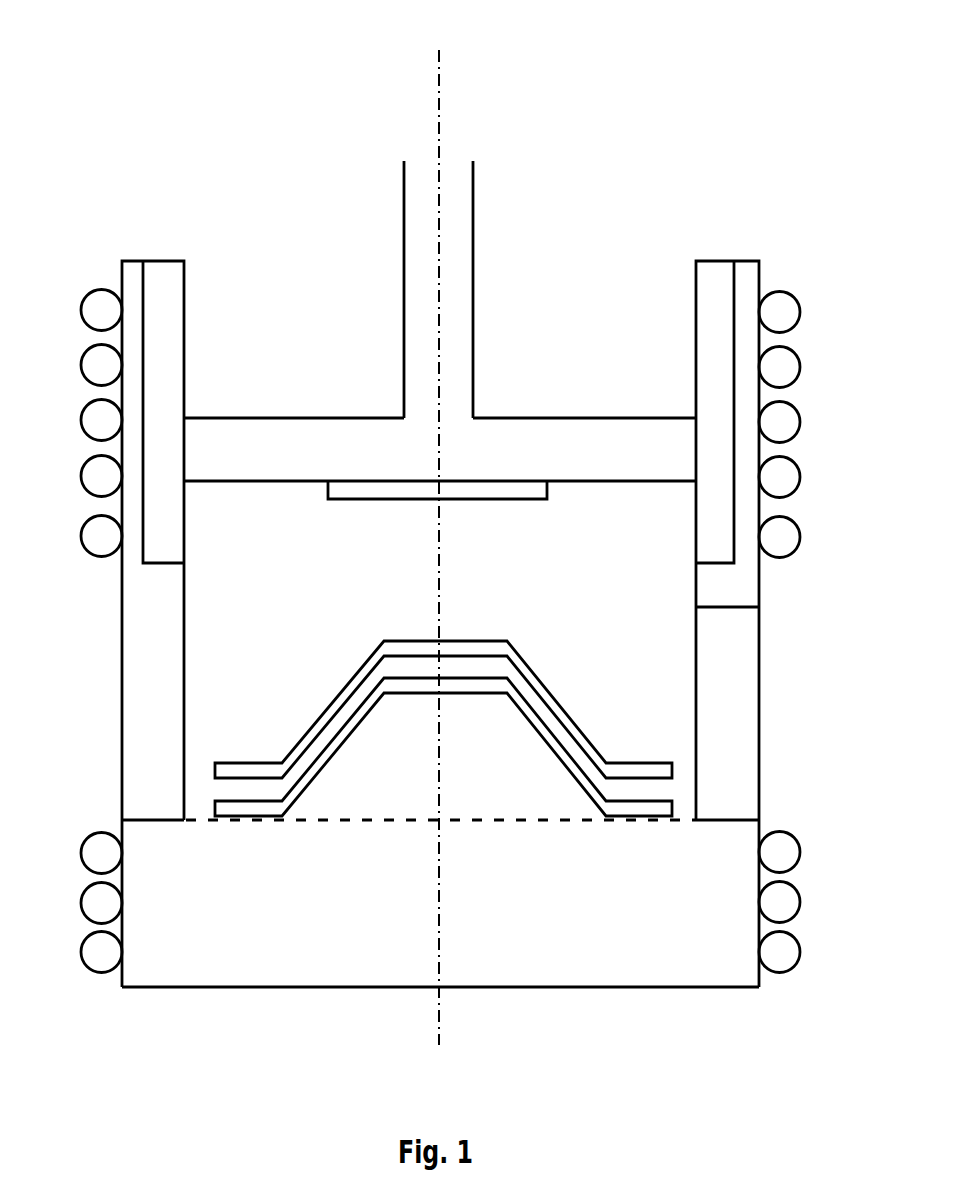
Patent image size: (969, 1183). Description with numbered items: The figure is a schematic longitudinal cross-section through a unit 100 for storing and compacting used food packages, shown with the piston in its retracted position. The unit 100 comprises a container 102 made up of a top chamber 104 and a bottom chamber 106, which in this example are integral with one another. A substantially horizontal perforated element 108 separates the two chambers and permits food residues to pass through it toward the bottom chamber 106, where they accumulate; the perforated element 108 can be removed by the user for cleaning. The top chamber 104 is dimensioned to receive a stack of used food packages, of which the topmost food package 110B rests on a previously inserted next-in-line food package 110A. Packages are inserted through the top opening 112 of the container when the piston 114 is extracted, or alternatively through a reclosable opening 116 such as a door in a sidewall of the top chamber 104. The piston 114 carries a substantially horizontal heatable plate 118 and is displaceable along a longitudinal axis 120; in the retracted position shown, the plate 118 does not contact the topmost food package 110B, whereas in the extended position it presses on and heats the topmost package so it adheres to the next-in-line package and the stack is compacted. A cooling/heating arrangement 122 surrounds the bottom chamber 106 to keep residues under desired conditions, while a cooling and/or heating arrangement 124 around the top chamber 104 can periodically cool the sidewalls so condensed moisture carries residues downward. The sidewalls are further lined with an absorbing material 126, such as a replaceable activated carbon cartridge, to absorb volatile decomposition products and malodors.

The unit 100 is at (167, 59).
The container 102 is at (87, 626).
The top chamber 104 is at (284, 649).
The bottom chamber 106 is at (637, 916).
The perforated element 108 is at (340, 822).
The next-in-line food package 110A is at (355, 727).
The topmost food package 110B is at (535, 680).
The top opening 112 is at (643, 257).
The piston 114 is at (458, 287).
The reclosable opening 116 is at (737, 708).
The heatable plate 118 is at (355, 490).
The longitudinal axis 120 is at (442, 77).
The cooling/heating arrangement 122 is at (785, 857).
The cooling and/or heating arrangement 124 is at (788, 368).
The absorbing material 126 is at (162, 273).